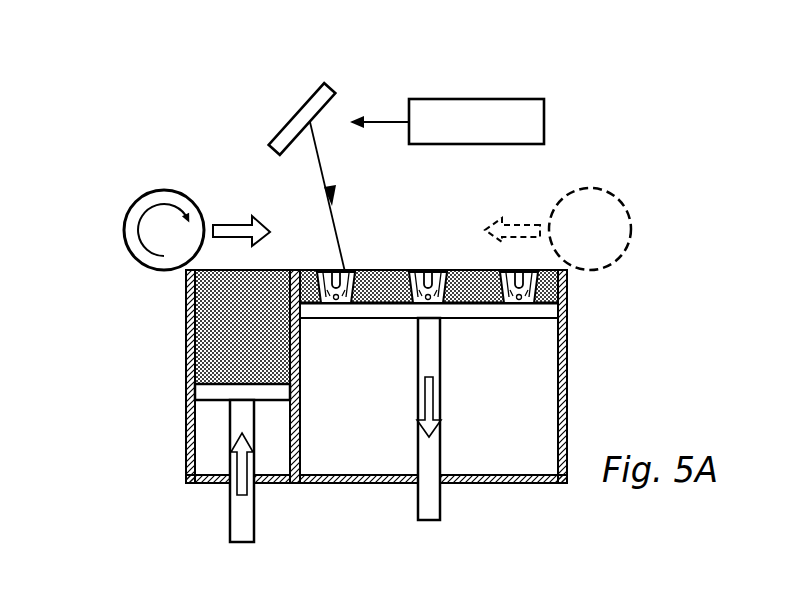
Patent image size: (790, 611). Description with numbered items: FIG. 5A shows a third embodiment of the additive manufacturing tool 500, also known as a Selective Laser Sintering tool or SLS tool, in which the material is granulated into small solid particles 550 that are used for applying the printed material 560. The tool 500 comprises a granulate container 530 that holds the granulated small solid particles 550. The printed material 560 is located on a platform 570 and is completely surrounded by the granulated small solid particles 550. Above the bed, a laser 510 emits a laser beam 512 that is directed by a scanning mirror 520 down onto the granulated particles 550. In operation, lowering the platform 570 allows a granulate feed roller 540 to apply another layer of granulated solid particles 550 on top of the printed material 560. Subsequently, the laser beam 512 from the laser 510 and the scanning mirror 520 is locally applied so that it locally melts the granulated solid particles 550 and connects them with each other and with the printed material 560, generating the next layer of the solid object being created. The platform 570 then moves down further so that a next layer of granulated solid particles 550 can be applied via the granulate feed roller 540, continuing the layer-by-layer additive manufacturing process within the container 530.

The additive manufacturing tool 500 is at (113, 107).
The laser 510 is at (480, 115).
The laser beam 512 is at (333, 211).
The scanning mirror 520 is at (292, 116).
The granulate container 530 is at (186, 412).
The granulate feed roller 540 is at (130, 233).
The granulated small solid particles 550 is at (223, 342).
The printed material 560 is at (347, 305).
The platform 570 is at (548, 310).